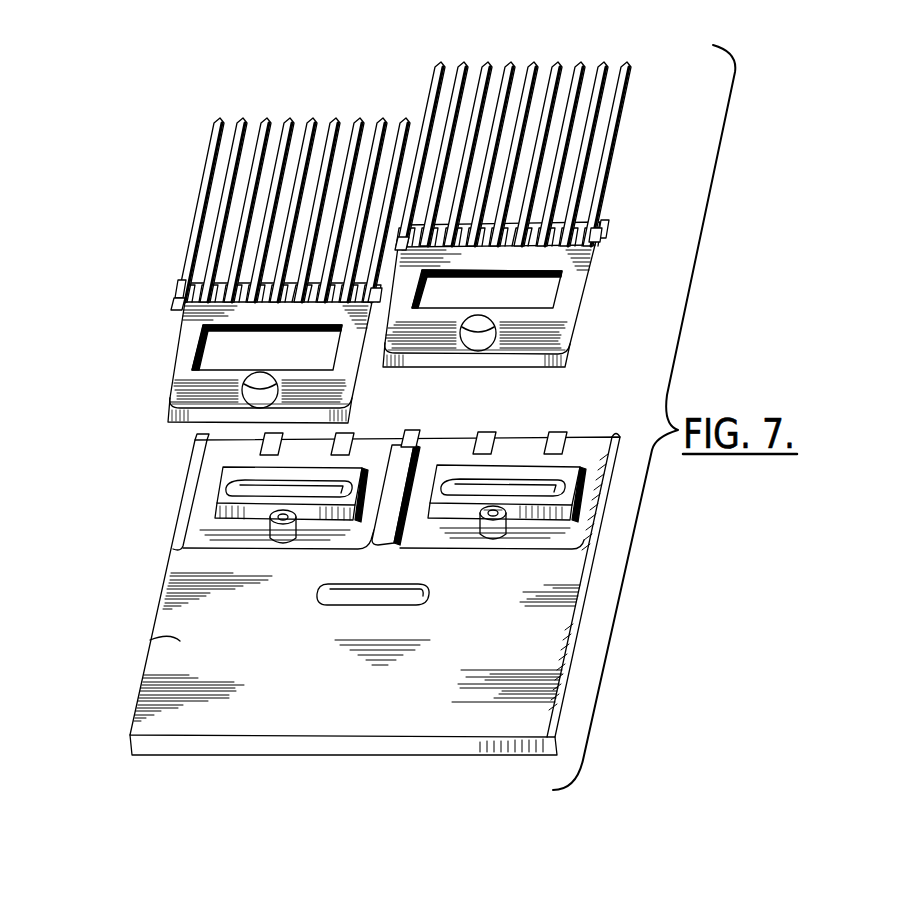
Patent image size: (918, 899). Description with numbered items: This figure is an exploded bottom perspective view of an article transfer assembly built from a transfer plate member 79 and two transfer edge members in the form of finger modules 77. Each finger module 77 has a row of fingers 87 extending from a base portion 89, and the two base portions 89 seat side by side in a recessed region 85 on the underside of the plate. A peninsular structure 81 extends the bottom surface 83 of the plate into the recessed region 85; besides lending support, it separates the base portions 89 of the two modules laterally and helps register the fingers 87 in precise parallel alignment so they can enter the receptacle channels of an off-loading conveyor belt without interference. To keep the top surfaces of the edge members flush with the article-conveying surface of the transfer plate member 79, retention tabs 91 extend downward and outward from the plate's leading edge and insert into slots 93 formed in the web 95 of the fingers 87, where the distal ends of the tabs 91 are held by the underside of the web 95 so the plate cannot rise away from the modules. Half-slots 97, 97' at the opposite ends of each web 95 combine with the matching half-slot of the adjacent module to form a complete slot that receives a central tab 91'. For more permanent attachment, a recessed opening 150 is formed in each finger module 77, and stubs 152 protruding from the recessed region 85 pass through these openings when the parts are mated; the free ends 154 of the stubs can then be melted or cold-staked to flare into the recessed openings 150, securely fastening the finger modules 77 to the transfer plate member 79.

The finger module 77 is at (340, 395).
The transfer plate member 79 is at (148, 676).
The peninsular structure 81 is at (412, 465).
The bottom surface 83 is at (150, 640).
The recessed region 85 is at (574, 447).
The fingers 87 is at (318, 118).
The base portion 89 is at (185, 400).
The retention tab 91 is at (413, 427).
The central tab 91' is at (423, 410).
The slot 93 is at (200, 331).
The web 95 is at (178, 282).
The half-slot 97 is at (481, 291).
The half-slot 97' is at (277, 273).
The recessed opening 150 is at (478, 346).
The stub 152 is at (496, 532).
The free end 154 is at (480, 518).